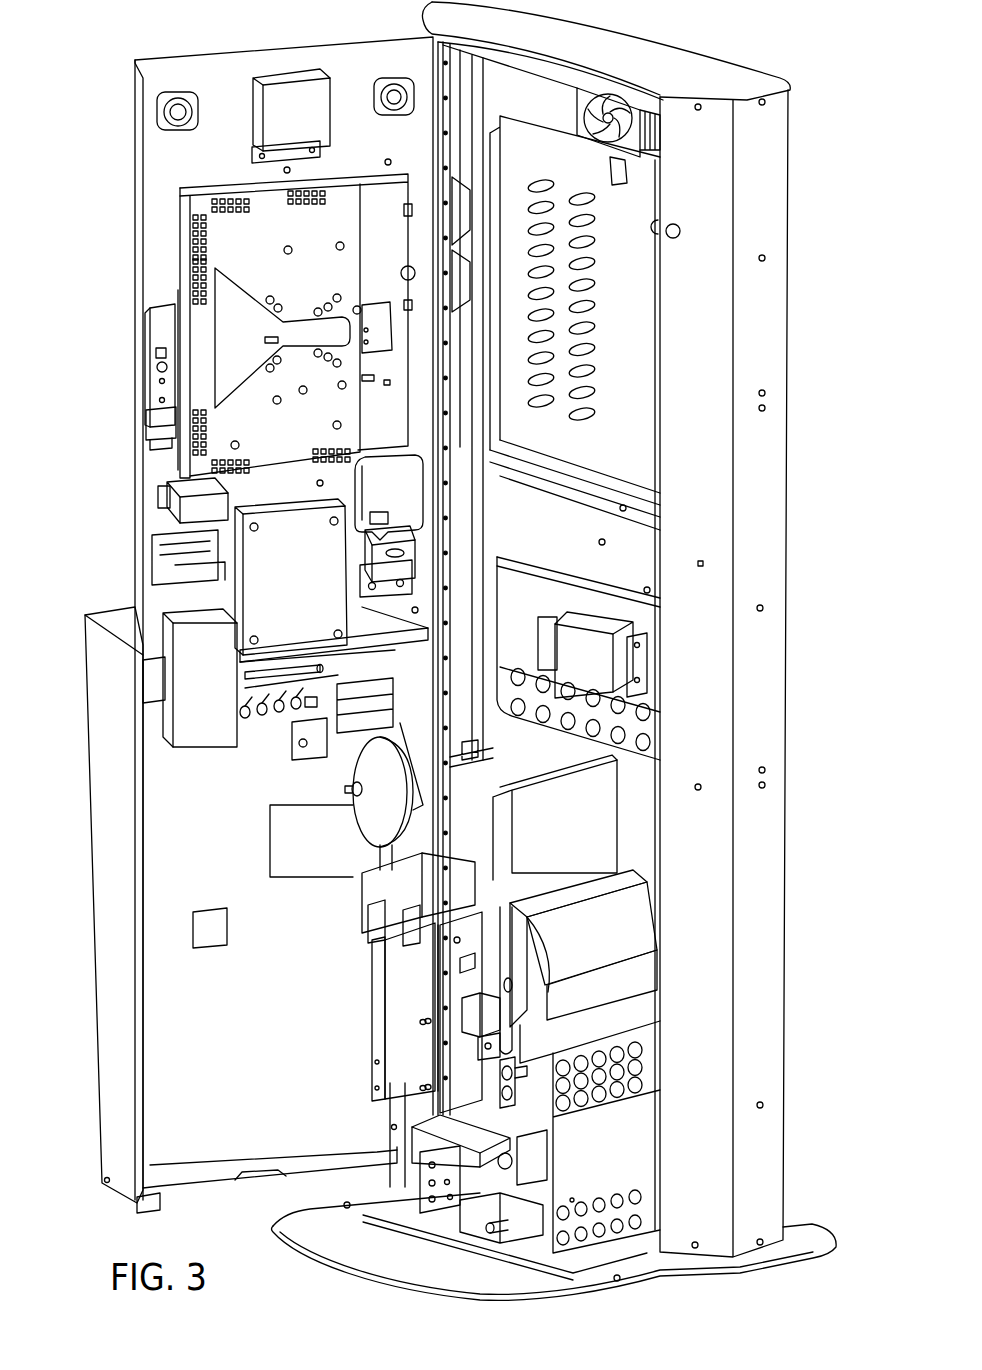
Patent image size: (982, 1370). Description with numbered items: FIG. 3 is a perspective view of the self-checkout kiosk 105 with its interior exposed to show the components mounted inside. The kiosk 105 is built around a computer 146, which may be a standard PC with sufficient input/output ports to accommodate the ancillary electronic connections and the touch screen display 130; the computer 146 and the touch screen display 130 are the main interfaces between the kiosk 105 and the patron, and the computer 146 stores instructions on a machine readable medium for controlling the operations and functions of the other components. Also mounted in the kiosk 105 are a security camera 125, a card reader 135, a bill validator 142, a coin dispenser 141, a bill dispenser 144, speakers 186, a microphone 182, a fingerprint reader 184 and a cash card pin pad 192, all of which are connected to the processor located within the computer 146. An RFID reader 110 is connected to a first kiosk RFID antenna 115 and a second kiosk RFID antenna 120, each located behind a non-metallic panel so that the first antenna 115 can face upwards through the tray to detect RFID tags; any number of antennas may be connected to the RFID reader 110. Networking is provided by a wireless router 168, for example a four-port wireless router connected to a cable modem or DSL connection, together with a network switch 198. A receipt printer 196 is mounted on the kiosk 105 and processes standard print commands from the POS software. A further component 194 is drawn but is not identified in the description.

The kiosk 105 is at (658, 63).
The RFID reader 110 is at (260, 715).
The first kiosk RFID antenna 115 is at (273, 562).
The second kiosk RFID antenna 120 is at (258, 662).
The security camera 125 is at (295, 102).
The touch screen display 130 is at (242, 237).
The card reader 135 is at (175, 507).
The coin dispenser 141 is at (597, 923).
The bill validator 142 is at (203, 657).
The bill dispenser 144 is at (408, 995).
The computer 146 is at (517, 1140).
The wireless router 168 is at (597, 603).
The microphone 182 is at (157, 338).
The fingerprint reader 184 is at (157, 417).
The speakers 186 is at (168, 113).
The cash card pin pad 192 is at (408, 490).
The mounting block 194 is at (415, 558).
The receipt printer 196 is at (360, 723).
The network switch 198 is at (588, 667).